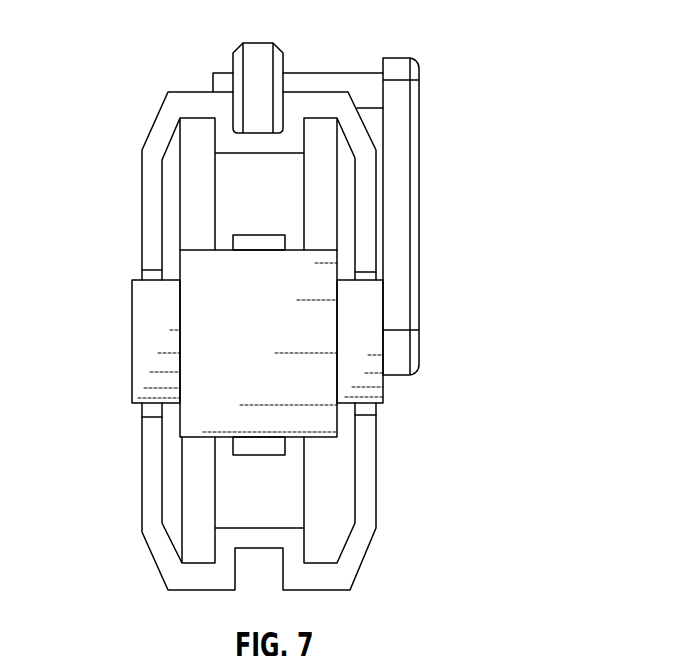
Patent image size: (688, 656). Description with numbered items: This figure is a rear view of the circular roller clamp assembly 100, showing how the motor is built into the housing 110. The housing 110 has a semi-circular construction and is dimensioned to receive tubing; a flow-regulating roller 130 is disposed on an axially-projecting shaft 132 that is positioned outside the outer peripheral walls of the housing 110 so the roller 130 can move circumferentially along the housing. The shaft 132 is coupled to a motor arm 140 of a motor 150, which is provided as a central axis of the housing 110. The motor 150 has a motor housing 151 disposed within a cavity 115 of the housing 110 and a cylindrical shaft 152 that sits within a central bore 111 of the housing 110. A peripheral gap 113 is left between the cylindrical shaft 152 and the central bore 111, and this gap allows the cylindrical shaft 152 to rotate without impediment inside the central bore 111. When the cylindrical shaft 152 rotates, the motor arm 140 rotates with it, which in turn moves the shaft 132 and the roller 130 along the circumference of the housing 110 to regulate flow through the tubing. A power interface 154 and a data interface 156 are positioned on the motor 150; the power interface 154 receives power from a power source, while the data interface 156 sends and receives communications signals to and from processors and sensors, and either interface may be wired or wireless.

The circular roller clamp assembly 100 is at (126, 64).
The housing 110 is at (162, 564).
The central bore 111 is at (147, 275).
The peripheral gap 113 is at (150, 410).
The cavity 115 is at (293, 483).
The flow-regulating roller 130 is at (257, 42).
The axially-projecting shaft 132 is at (340, 73).
The motor arm 140 is at (410, 193).
The motor 150 is at (342, 367).
The motor housing 151 is at (313, 323).
The cylindrical shaft 152 is at (132, 330).
The power interface 154 is at (258, 233).
The data interface 156 is at (257, 455).